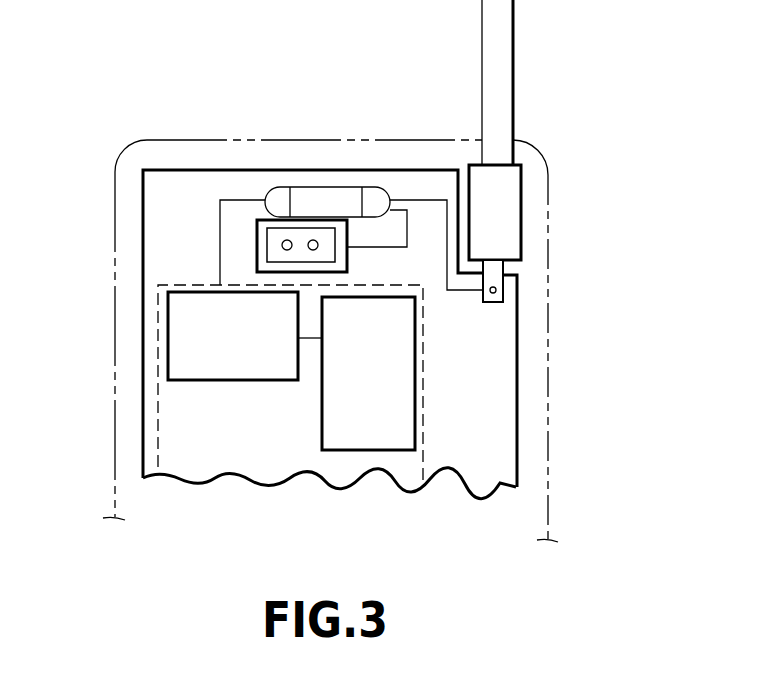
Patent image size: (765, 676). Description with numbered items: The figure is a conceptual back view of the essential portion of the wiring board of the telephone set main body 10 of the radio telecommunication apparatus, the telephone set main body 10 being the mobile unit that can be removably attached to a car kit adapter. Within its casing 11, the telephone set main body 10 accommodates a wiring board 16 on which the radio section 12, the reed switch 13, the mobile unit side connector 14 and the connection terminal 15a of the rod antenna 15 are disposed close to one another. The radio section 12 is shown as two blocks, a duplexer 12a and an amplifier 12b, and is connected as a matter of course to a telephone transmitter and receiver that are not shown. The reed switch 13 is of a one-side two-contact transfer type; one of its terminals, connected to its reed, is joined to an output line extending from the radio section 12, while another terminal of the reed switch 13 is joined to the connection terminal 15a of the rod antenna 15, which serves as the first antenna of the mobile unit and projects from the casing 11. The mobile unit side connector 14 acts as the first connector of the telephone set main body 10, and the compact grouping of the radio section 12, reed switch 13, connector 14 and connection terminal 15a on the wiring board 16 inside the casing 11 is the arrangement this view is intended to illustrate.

The telephone set main body 10 is at (115, 134).
The casing 11 is at (113, 407).
The radio section 12 is at (319, 422).
The duplexer 12a is at (233, 336).
The amplifier 12b is at (368, 373).
The reed switch 13 is at (335, 202).
The mobile unit side connector 14 is at (258, 238).
The rod antenna 15 is at (513, 75).
The connection terminal 15a is at (502, 267).
The wiring board 16 is at (163, 222).